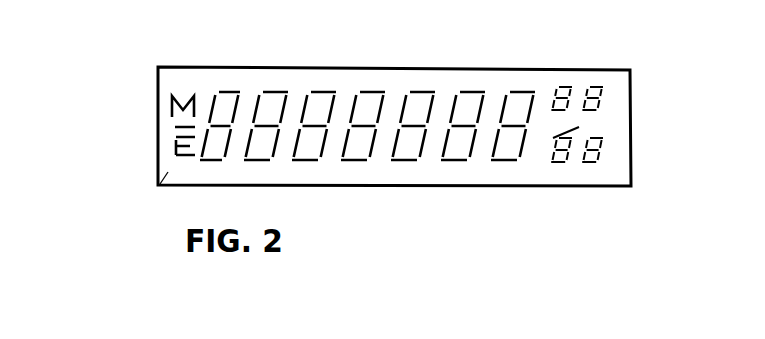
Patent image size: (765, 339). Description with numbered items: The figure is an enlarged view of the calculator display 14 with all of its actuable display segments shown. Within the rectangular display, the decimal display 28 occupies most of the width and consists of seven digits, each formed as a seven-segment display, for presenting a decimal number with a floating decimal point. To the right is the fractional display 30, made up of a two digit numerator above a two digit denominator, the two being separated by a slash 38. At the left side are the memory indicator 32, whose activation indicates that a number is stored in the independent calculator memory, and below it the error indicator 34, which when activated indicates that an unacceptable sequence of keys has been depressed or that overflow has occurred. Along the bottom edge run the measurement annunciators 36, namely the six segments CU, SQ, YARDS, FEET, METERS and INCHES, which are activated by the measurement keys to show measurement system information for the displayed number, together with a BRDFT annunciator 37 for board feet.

The calculator display 14 is at (158, 114).
The decimal display 28 is at (542, 60).
The fractional display 30 is at (607, 60).
The memory indicator 32 is at (183, 93).
The error indicator 34 is at (168, 148).
The measurement annunciators 36 is at (535, 190).
The BRDFT annunciator 37 is at (168, 170).
The slash 38 is at (583, 127).